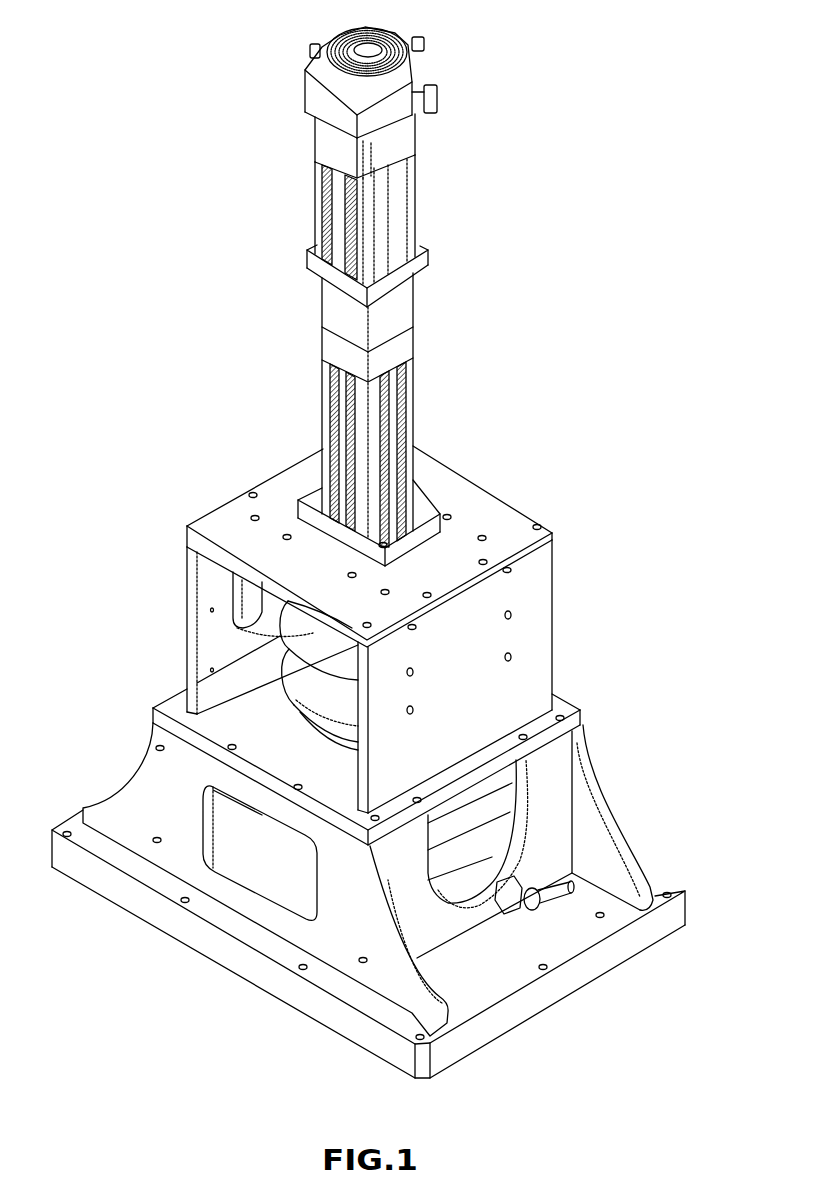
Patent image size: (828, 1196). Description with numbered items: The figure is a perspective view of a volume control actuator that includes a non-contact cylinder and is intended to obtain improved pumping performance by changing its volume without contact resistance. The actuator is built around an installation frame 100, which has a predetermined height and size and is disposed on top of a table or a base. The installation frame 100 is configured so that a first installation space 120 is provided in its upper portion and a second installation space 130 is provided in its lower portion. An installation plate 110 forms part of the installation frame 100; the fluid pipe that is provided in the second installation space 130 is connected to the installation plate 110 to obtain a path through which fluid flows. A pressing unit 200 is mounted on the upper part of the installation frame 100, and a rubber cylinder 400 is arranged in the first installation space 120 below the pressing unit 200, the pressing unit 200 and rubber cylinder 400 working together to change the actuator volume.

The installation frame 100 is at (373, 762).
The installation plate 110 is at (253, 727).
The first installation space 120 is at (237, 668).
The second installation space 130 is at (247, 847).
The pressing unit 200 is at (425, 296).
The rubber cylinder 400 is at (233, 630).